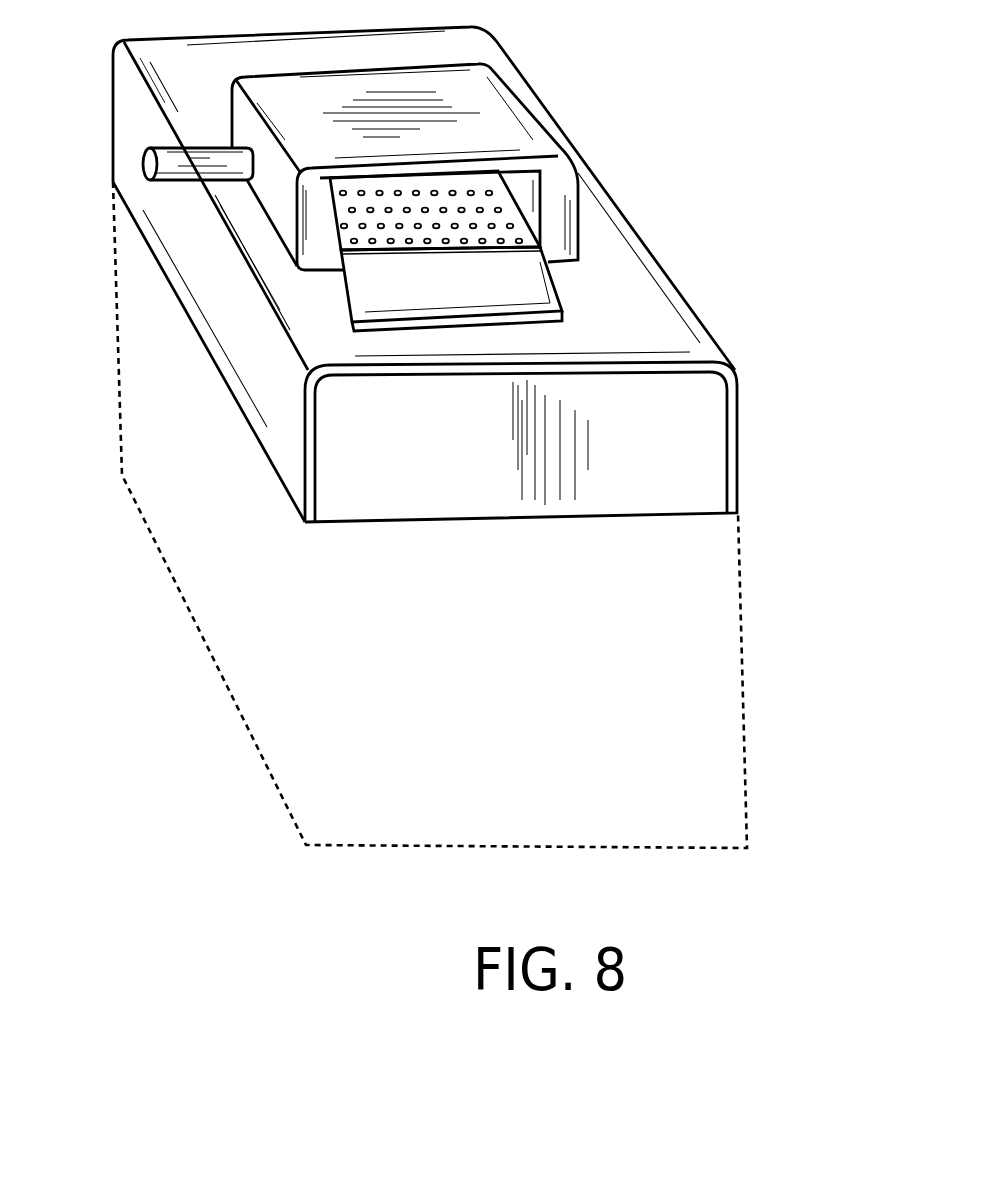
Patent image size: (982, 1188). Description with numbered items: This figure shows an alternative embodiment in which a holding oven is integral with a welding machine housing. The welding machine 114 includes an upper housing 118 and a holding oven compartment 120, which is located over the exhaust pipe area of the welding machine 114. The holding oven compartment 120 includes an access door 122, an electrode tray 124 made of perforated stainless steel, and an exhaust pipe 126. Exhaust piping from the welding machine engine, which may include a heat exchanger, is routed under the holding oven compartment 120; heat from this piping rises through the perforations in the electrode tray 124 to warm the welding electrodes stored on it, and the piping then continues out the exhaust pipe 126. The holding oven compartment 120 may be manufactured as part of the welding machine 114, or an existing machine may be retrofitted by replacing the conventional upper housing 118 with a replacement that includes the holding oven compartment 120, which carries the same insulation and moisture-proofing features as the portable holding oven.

The welding machine 114 is at (768, 611).
The upper housing 118 is at (740, 418).
The holding oven compartment 120 is at (547, 138).
The access door 122 is at (563, 313).
The electrode tray 124 is at (373, 250).
The exhaust pipe 126 is at (143, 161).